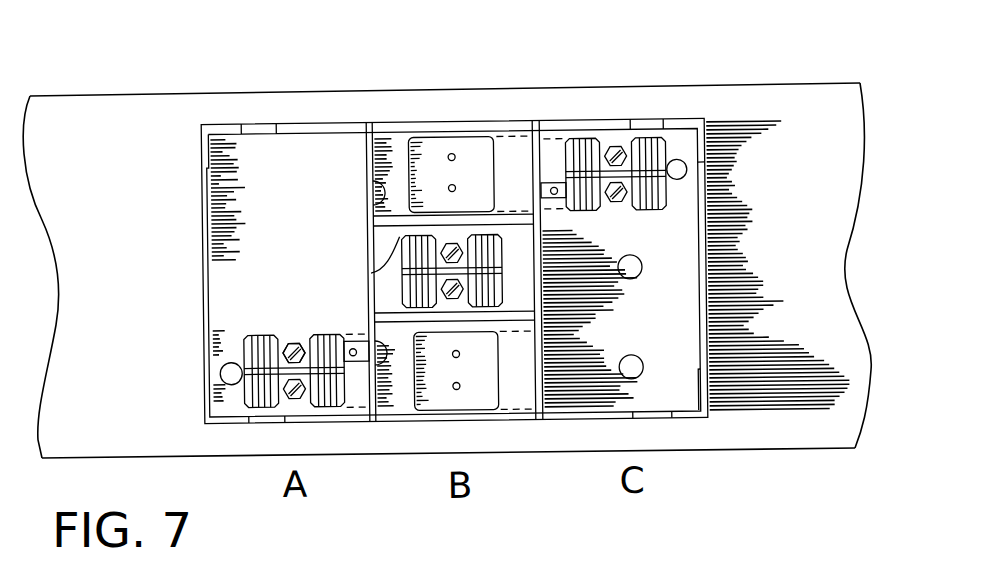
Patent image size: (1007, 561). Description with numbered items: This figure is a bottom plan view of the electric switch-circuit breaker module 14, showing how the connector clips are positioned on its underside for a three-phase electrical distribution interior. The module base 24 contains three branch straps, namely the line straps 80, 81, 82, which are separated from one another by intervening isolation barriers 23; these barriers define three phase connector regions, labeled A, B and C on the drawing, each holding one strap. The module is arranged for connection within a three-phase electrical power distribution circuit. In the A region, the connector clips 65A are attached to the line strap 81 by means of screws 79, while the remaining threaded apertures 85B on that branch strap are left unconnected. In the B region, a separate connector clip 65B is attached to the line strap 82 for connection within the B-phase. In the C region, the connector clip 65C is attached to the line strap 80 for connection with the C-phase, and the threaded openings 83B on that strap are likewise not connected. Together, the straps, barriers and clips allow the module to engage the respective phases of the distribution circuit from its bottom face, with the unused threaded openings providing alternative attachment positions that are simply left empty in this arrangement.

The module 14 is at (946, 434).
The module base 24 is at (221, 119).
The isolation barriers 23 is at (372, 121).
The branch strap 80 is at (497, 135).
The threaded openings 83B is at (454, 153).
The line strap 81 is at (433, 410).
The threaded apertures 85B is at (458, 390).
The connector clip 65B is at (505, 237).
The line strap 82 is at (371, 272).
The connector clip 65C is at (592, 140).
The connector clips 65A is at (258, 333).
The screws 79 is at (293, 341).